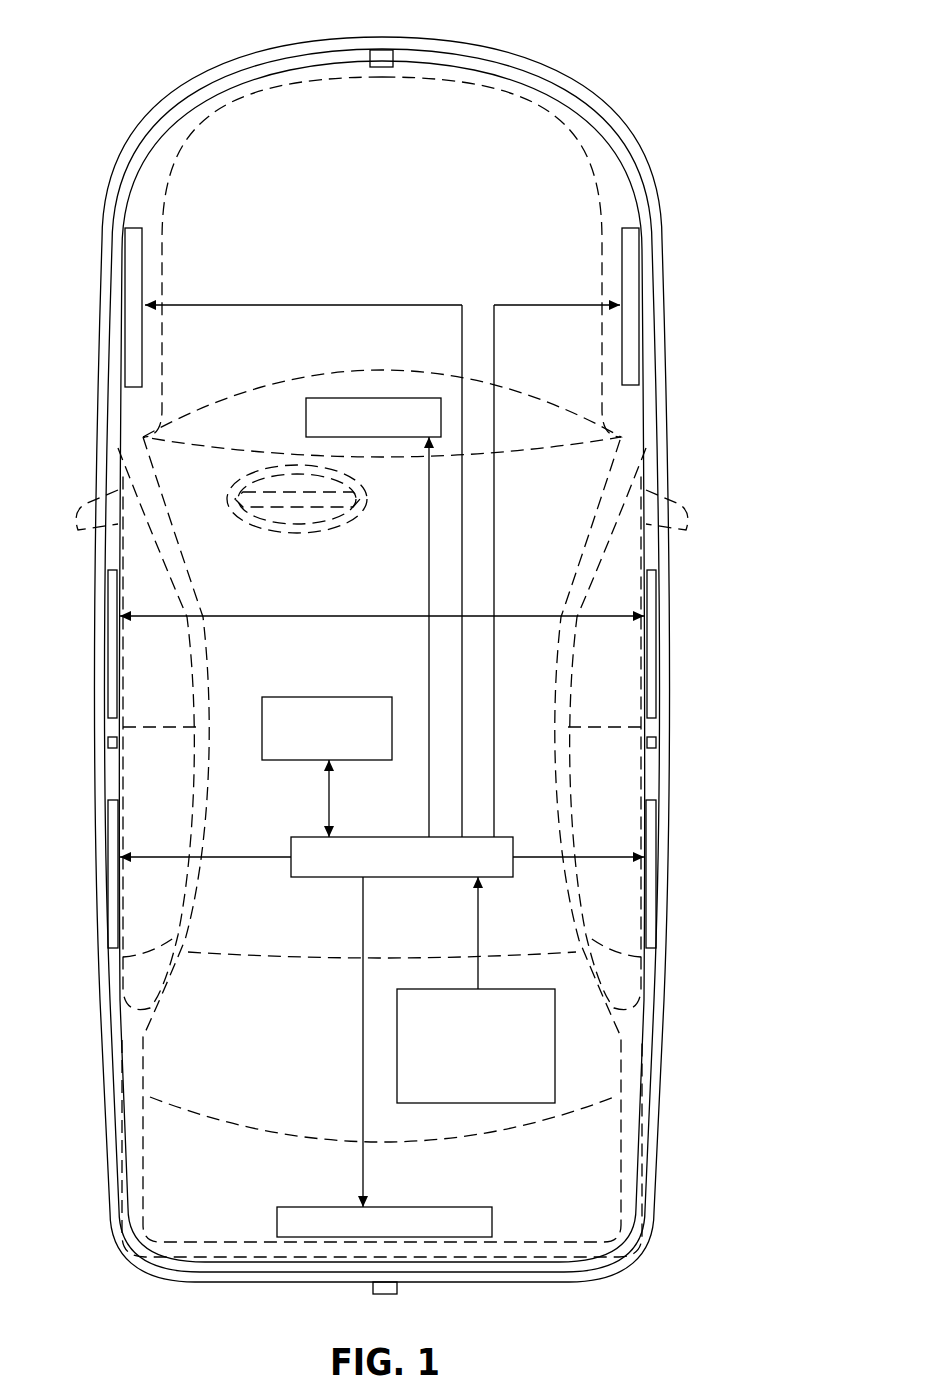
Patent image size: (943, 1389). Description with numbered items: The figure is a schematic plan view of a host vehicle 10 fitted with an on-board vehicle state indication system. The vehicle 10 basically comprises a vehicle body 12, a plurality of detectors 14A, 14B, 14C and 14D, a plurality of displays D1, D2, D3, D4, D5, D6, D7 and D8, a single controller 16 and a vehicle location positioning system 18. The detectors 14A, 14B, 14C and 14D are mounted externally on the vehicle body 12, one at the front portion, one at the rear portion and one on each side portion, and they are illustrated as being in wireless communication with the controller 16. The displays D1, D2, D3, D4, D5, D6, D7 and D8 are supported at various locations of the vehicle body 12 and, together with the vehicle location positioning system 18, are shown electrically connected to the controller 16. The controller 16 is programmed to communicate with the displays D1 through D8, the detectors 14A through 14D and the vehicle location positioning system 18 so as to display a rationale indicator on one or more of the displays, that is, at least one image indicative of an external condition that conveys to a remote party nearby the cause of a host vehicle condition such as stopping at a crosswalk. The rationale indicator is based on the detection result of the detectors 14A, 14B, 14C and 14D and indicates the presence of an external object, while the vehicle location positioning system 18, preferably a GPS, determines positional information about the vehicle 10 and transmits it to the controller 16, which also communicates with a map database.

The host vehicle 10 is at (617, 37).
The vehicle body 12 is at (666, 189).
The detector 14A is at (379, 50).
The detector 14B is at (108, 743).
The detector 14C is at (657, 740).
The detector 14D is at (376, 1292).
The controller 16 is at (306, 877).
The vehicle location positioning system 18 is at (553, 1033).
The display D1 is at (455, 1207).
The display D2 is at (108, 912).
The display D3 is at (108, 590).
The display D4 is at (125, 257).
The display D5 is at (306, 418).
The display D6 is at (639, 348).
The display D7 is at (657, 585).
The display D8 is at (657, 900).